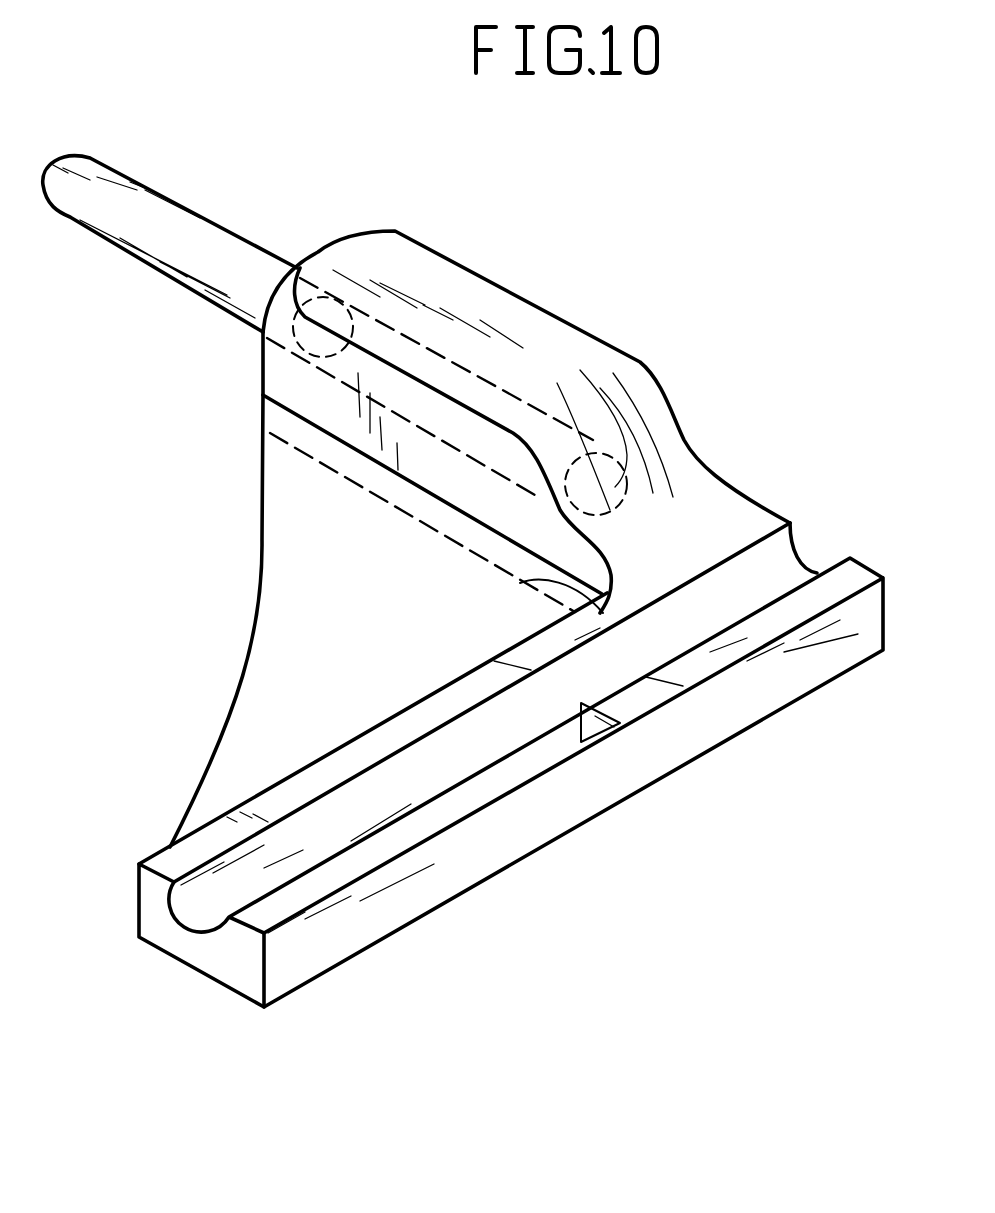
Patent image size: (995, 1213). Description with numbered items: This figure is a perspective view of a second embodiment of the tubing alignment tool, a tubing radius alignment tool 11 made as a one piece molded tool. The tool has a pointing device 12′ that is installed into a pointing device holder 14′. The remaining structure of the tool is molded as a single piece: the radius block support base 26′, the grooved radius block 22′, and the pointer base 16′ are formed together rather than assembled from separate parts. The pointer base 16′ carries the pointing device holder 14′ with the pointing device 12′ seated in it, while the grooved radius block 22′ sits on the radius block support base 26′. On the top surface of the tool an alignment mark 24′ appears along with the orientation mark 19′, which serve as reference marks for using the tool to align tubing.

The tubing radius alignment tool 11 is at (640, 362).
The pointing device 12′ is at (248, 237).
The pointing device holder 14′ is at (500, 285).
The pointer base 16′ is at (695, 436).
The orientation mark 19′ is at (520, 583).
The grooved radius block 22′ is at (800, 548).
The alignment mark 24′ is at (616, 730).
The radius block support base 26′ is at (289, 967).